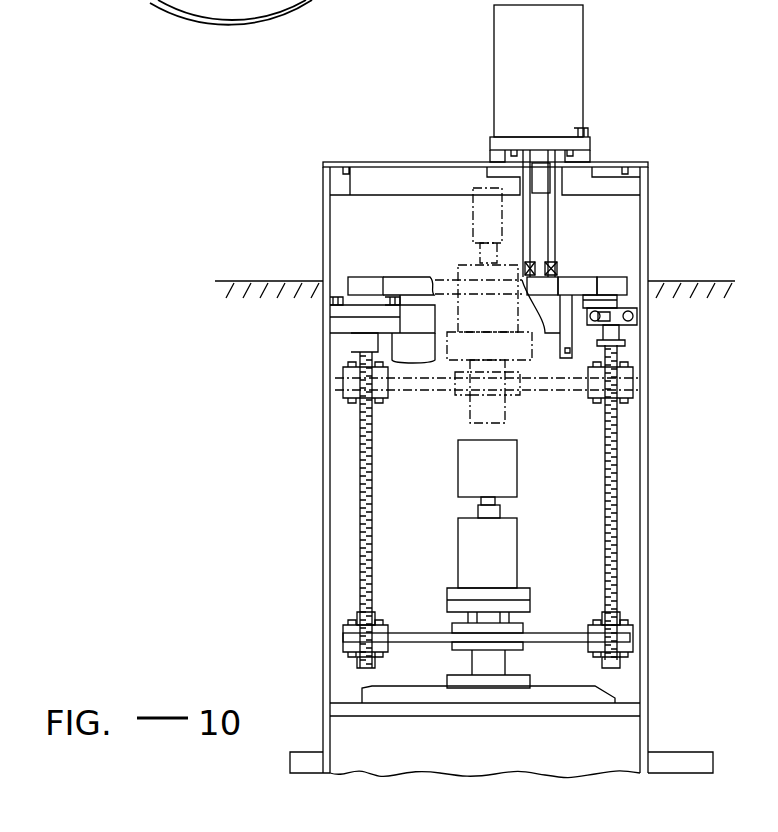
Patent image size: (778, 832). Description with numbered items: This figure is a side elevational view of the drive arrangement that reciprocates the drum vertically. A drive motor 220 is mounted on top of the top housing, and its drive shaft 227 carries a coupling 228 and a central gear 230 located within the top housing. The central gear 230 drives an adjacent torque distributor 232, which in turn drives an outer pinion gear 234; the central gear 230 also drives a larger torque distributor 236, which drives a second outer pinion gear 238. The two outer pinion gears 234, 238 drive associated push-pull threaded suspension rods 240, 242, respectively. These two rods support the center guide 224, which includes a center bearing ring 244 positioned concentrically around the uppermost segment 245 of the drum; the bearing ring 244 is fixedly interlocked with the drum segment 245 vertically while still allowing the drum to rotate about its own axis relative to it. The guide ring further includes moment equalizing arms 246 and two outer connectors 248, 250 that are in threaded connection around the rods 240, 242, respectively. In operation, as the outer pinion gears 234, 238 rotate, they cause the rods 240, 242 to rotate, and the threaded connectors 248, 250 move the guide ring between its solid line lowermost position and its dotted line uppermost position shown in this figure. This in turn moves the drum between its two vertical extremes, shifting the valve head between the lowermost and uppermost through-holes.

The hydraulic cylinder 220 is at (570, 73).
The center guide 224 is at (521, 630).
The drive shaft 227 is at (569, 157).
The coupling 228 is at (542, 177).
The central gear 230 is at (547, 287).
The torque distributor 232 is at (577, 288).
The outer pinion gear 234 is at (613, 287).
The larger torque distributor 236 is at (446, 240).
The second outer pinion gear 238 is at (370, 283).
The push-pull threaded suspension rod 240 is at (615, 504).
The push-pull threaded suspension rod 242 is at (362, 498).
The center bearing ring 244 is at (505, 648).
The uppermost segment 245 is at (478, 665).
The moment equalizing arms 246 is at (423, 635).
The outer connector 248 is at (622, 637).
The outer connector 250 is at (345, 637).